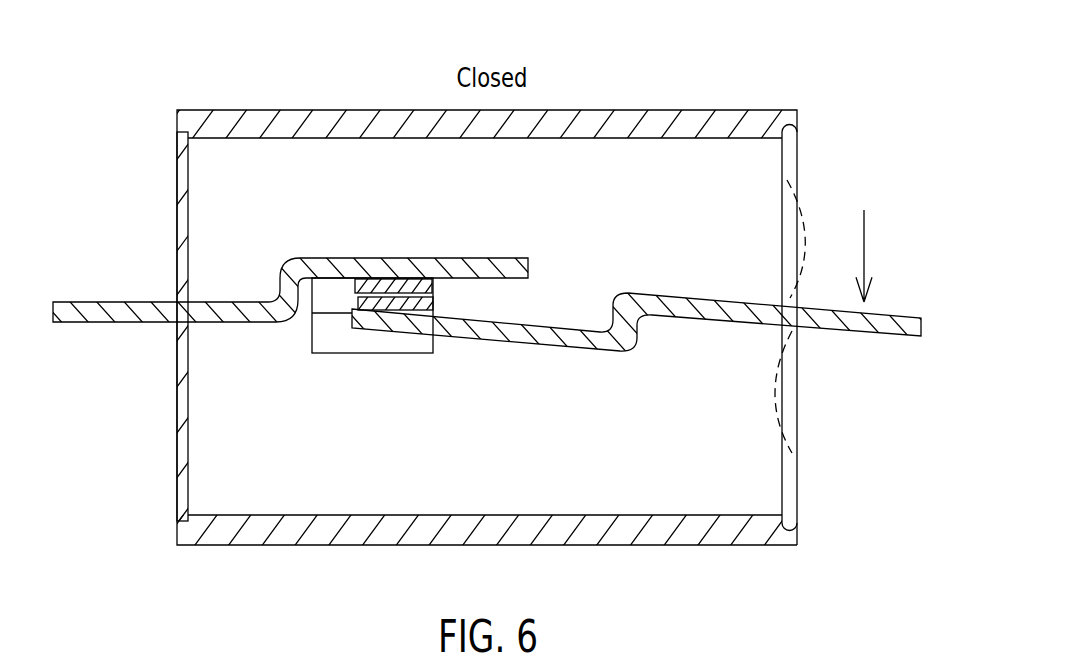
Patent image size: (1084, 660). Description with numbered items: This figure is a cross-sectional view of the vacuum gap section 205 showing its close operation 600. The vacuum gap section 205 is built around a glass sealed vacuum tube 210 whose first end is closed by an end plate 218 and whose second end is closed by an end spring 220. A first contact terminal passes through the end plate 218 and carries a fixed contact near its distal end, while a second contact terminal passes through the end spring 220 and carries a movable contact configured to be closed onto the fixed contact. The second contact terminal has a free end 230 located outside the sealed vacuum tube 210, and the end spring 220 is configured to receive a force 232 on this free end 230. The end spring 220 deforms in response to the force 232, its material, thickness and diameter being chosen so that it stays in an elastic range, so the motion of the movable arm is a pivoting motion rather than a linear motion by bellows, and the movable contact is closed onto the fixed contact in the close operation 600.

The vacuum gap section 205 is at (792, 59).
The sealed vacuum tube 210 is at (634, 110).
The end plate 218 is at (185, 192).
The end spring 220 is at (788, 485).
The free end 230 is at (878, 338).
The force 232 is at (865, 245).
The close operation 600 is at (578, 282).